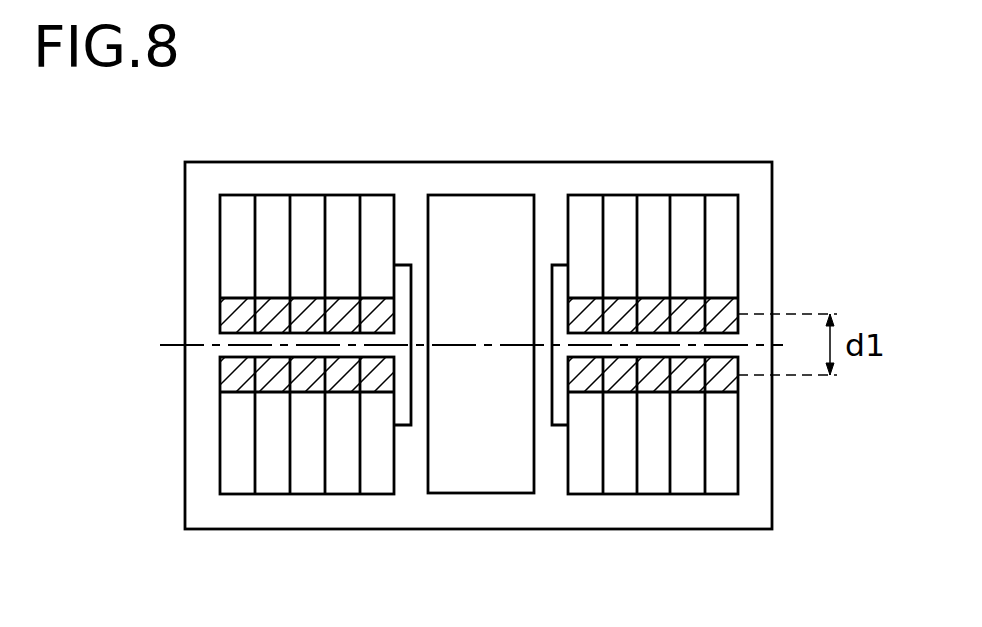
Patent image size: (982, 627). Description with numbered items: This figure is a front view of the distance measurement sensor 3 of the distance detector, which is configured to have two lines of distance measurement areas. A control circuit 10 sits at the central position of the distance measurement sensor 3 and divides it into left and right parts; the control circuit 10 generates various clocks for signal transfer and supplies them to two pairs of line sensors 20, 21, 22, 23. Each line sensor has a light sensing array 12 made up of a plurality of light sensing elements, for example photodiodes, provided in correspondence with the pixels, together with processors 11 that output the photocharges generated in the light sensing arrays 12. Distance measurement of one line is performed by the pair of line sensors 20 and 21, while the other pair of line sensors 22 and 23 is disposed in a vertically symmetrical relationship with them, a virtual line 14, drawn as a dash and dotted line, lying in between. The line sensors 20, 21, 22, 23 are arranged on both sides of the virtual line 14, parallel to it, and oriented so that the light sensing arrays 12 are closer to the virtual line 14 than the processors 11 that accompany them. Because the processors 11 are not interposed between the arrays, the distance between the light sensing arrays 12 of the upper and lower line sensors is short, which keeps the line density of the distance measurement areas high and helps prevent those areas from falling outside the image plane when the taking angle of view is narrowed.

The distance measurement sensor 3 is at (757, 505).
The control circuit 10 is at (500, 480).
The processors 11 is at (235, 213).
The light sensing array 12 is at (220, 313).
The virtual line 14 is at (172, 345).
The line sensor 20 is at (305, 195).
The line sensor 21 is at (648, 195).
The line sensor 22 is at (313, 494).
The line sensor 23 is at (655, 495).